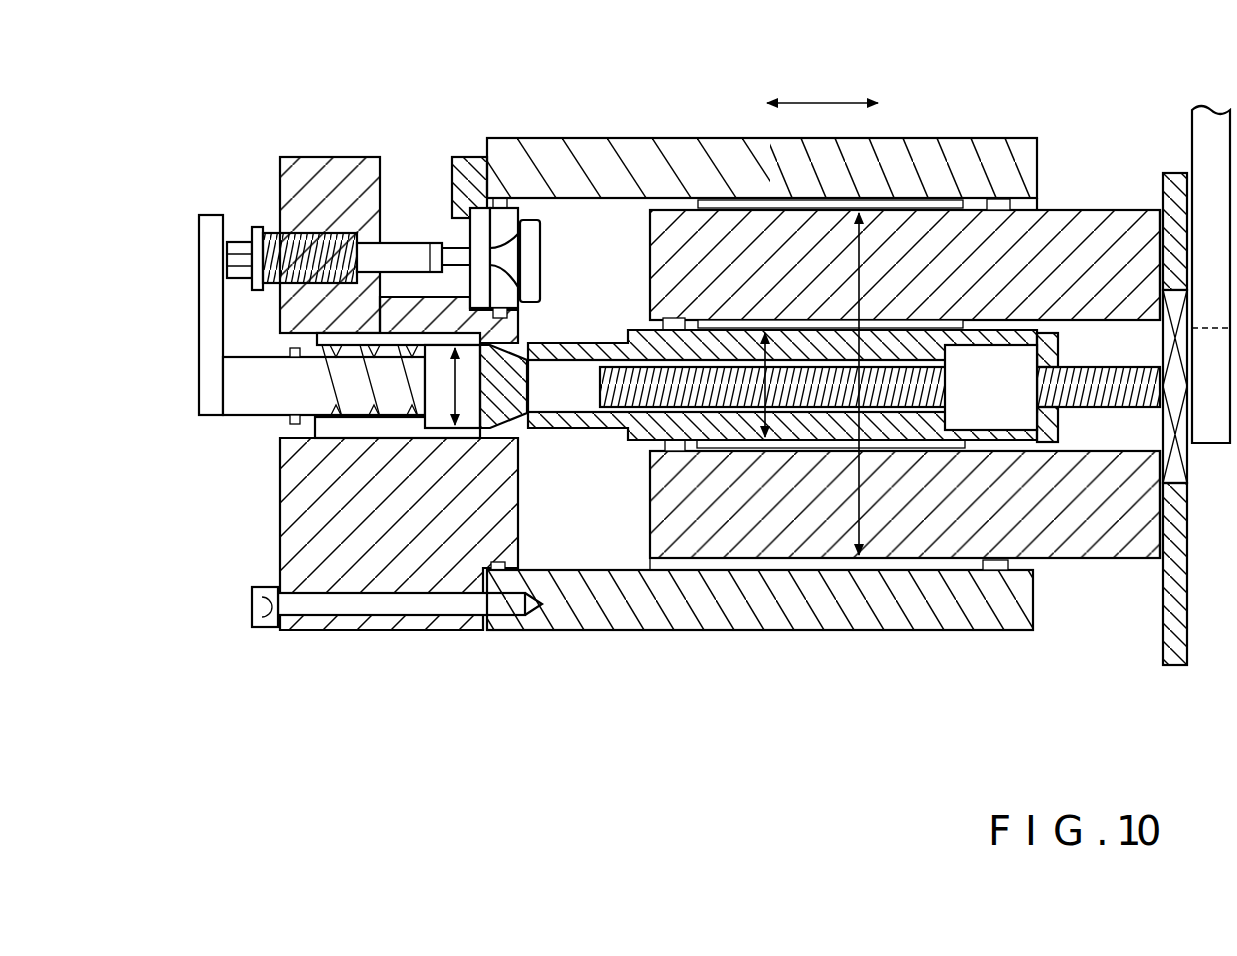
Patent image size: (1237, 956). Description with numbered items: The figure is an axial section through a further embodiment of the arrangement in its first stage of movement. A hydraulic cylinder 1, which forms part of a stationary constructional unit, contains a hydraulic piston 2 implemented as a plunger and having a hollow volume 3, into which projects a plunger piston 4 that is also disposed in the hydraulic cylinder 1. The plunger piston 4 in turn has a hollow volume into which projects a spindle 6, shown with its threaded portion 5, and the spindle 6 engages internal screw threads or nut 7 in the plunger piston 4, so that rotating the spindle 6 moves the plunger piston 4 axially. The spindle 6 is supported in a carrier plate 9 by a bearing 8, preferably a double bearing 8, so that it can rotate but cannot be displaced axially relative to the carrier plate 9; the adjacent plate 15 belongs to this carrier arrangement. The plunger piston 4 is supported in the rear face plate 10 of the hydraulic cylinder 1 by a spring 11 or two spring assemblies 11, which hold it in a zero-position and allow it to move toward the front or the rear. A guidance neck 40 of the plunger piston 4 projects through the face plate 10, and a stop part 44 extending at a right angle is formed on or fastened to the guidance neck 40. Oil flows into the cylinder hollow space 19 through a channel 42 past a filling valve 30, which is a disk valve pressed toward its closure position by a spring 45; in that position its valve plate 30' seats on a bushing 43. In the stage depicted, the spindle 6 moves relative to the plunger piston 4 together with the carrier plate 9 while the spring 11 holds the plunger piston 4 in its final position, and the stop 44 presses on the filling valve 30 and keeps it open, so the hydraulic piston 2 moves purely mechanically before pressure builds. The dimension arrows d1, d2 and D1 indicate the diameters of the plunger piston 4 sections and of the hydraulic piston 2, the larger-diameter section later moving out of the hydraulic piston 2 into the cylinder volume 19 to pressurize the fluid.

The hydraulic cylinder 1 is at (533, 178).
The hydraulic piston 2 is at (722, 235).
The hollow volume 3 is at (1117, 442).
The plunger piston 4 is at (569, 343).
The threaded rod 5 is at (575, 400).
The spindle 6 is at (675, 395).
The nut 7 is at (968, 385).
The bearing 8 is at (1163, 310).
The carrier plate 9 is at (1172, 645).
The rear face plate 10 is at (327, 193).
The spring 11 is at (333, 423).
The mounting plate 15 is at (1210, 257).
The cylinder hollow space 19 is at (633, 530).
The filling valve 30 is at (463, 219).
The valve plate 30' is at (588, 205).
The guidance neck 40 is at (268, 388).
The channel 42 is at (390, 193).
The bushing 43 is at (508, 197).
The stop part 44 is at (205, 318).
The spring 45 is at (277, 235).
The diameter d1 is at (760, 405).
The diameter d2 is at (462, 405).
The diameter D1 is at (856, 570).